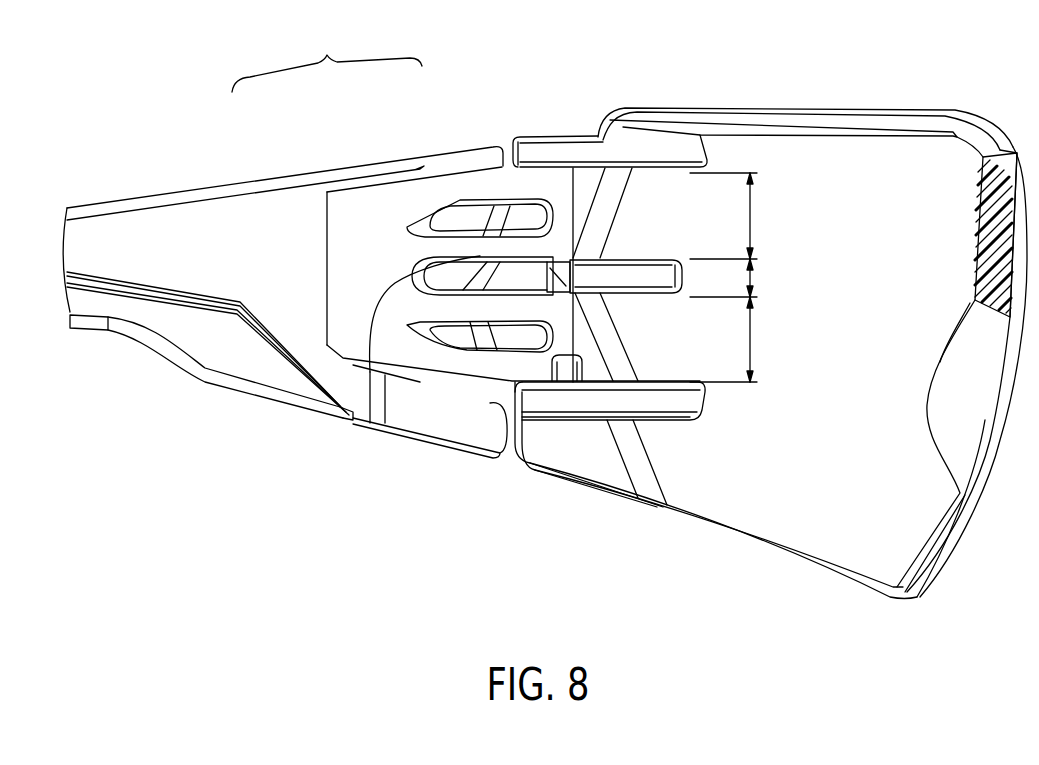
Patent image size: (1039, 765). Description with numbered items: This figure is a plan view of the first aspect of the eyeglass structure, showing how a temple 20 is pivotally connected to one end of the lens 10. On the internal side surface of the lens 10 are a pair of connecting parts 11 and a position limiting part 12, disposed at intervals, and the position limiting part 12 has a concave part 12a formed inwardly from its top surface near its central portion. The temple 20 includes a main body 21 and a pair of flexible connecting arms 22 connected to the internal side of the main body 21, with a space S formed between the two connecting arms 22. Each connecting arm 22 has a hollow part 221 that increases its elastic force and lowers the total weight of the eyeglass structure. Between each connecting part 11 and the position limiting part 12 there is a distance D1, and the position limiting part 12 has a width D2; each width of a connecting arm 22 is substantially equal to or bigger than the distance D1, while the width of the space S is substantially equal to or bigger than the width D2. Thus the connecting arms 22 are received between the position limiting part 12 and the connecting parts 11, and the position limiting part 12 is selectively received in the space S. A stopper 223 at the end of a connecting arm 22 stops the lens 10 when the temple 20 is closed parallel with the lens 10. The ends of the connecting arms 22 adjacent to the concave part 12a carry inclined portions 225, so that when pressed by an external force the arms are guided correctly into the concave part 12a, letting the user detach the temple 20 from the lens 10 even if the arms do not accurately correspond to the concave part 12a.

The lens 10 is at (793, 148).
The connecting part 11 is at (625, 145).
The position limiting part 12 is at (637, 273).
The concave part 12a is at (565, 278).
The temple 20 is at (327, 58).
The main body 21 is at (262, 215).
The connecting arm 22 is at (415, 200).
The hollow part 221 is at (463, 215).
The stopper 223 is at (568, 372).
The inclined portion 225 is at (567, 243).
The space S is at (370, 400).
The distance D1 is at (741, 277).
The width D2 is at (770, 278).